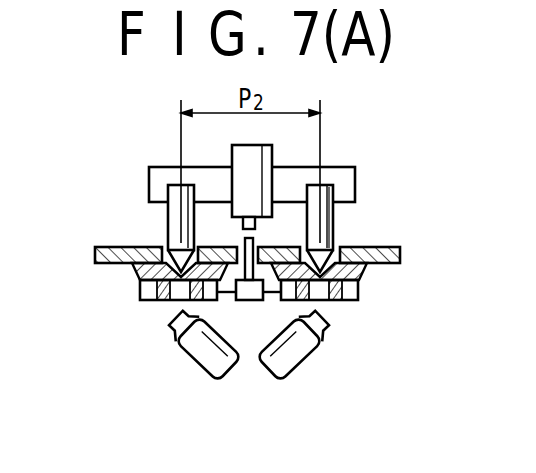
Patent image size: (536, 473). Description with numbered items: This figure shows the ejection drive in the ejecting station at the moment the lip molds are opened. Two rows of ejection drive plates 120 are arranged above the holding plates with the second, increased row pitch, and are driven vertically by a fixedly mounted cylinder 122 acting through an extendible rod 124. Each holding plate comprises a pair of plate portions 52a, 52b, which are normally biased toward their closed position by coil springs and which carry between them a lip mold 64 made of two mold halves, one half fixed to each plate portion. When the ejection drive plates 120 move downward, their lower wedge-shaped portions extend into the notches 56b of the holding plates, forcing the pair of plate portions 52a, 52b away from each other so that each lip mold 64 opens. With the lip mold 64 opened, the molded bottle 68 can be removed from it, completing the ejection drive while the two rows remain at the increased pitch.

The ejection drive plate 120 is at (403, 233).
The cylinder 122 is at (272, 158).
The extendible rod 124 is at (333, 227).
The notch 56b is at (398, 293).
The plate portion 52a is at (358, 297).
The plate portion 52b is at (268, 300).
The lip mold 64 is at (135, 318).
The molded bottle 68 is at (168, 380).